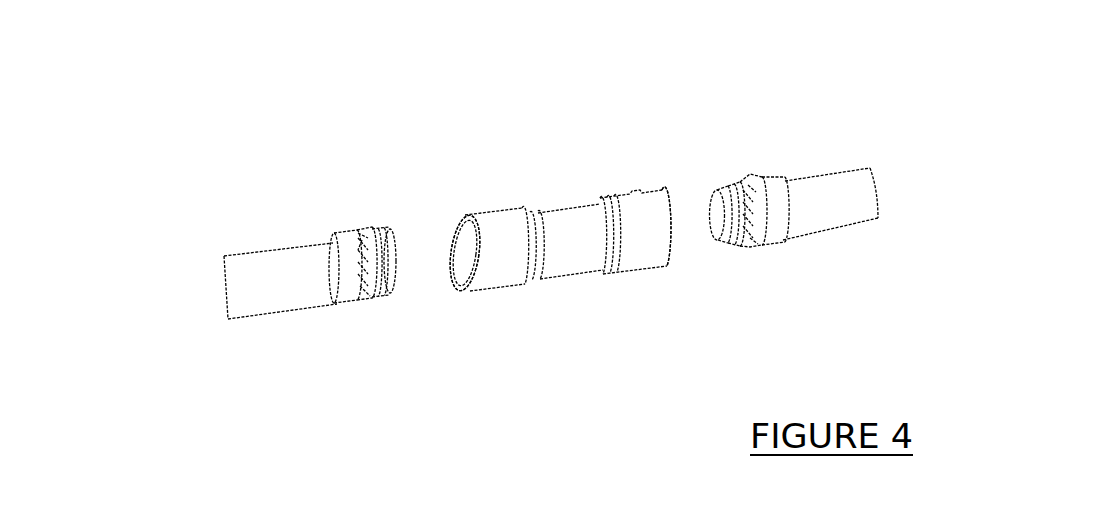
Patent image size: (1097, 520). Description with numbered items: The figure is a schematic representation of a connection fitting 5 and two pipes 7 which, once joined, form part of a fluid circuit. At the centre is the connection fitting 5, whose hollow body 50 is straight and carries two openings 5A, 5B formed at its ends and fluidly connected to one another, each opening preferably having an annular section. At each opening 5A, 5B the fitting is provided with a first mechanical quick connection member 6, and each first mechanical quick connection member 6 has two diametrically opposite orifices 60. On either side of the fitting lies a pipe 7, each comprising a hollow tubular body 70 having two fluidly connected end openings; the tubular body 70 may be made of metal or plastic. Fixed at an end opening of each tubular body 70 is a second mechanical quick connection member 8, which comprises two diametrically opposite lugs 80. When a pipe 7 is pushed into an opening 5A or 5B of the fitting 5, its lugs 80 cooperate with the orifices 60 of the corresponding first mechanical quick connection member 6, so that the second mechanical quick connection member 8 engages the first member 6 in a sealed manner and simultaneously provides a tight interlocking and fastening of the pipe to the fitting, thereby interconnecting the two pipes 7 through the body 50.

The connection fitting 5 is at (468, 153).
The opening 5A is at (442, 286).
The opening 5B is at (688, 252).
The first mechanical quick connection member 6 is at (421, 178).
The pipe 7 is at (258, 200).
The second mechanical quick connection member 8 is at (334, 205).
The hollow body 50 is at (571, 260).
The orifice 60 is at (480, 217).
The hollow tubular body 70 is at (277, 298).
The lug 80 is at (346, 305).